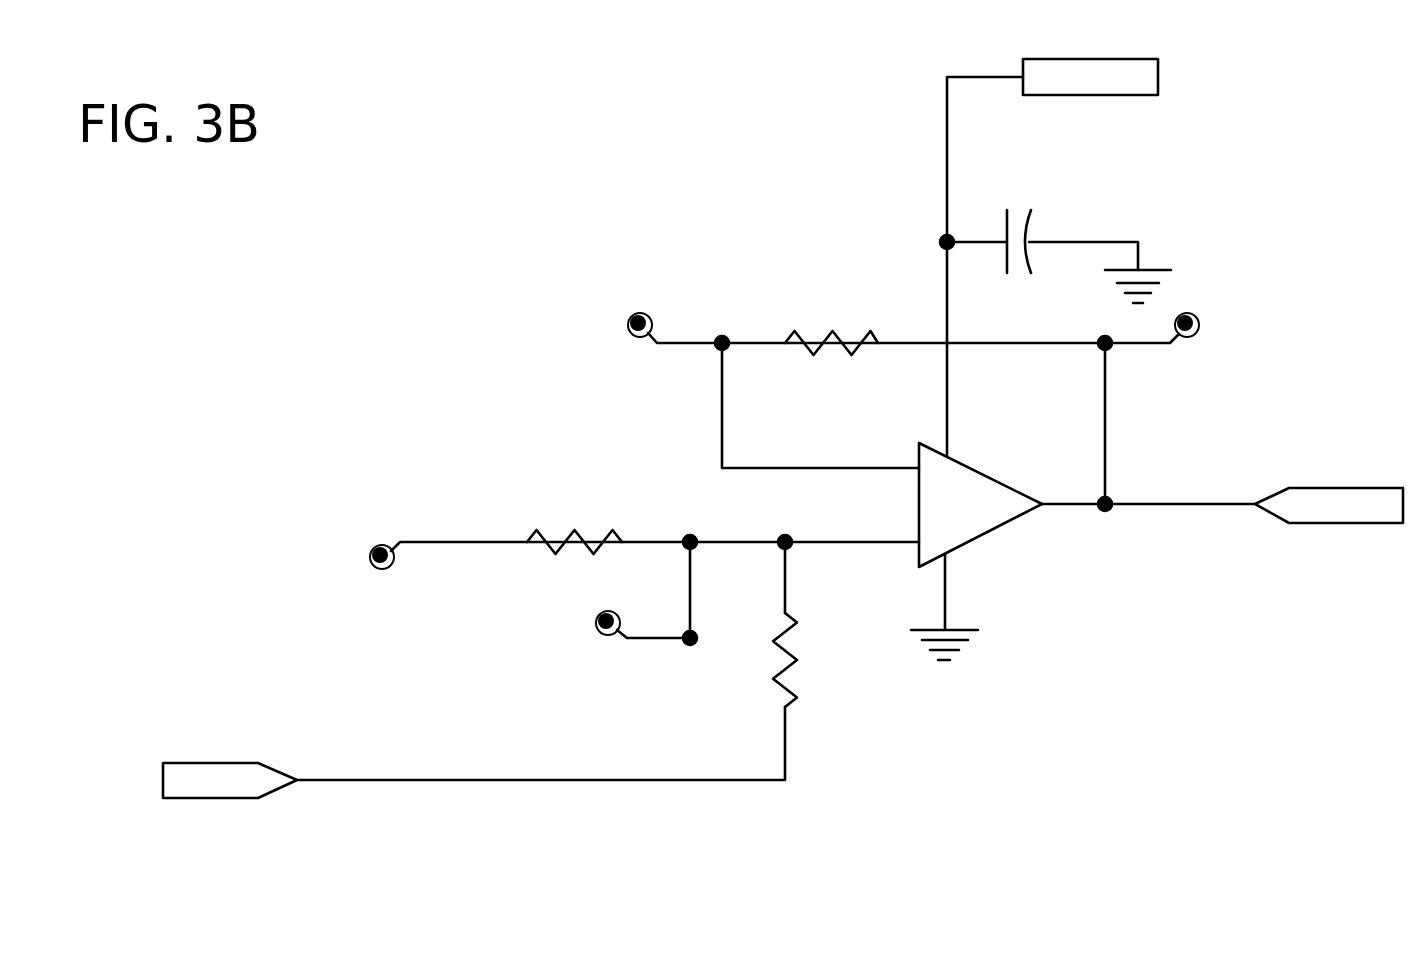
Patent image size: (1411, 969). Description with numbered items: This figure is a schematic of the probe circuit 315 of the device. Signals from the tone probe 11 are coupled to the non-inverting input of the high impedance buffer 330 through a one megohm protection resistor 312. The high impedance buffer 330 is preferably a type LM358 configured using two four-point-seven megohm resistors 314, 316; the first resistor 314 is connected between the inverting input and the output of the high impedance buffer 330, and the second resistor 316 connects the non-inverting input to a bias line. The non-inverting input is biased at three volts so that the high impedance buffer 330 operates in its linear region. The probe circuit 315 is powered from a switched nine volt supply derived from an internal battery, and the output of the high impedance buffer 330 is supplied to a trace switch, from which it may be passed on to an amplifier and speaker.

The tone probe 11 is at (380, 551).
The protection resistor 312 is at (583, 527).
The resistor 314 is at (822, 345).
The probe circuit 315 is at (700, 115).
The resistor 316 is at (790, 673).
The high impedance buffer 330 is at (984, 517).